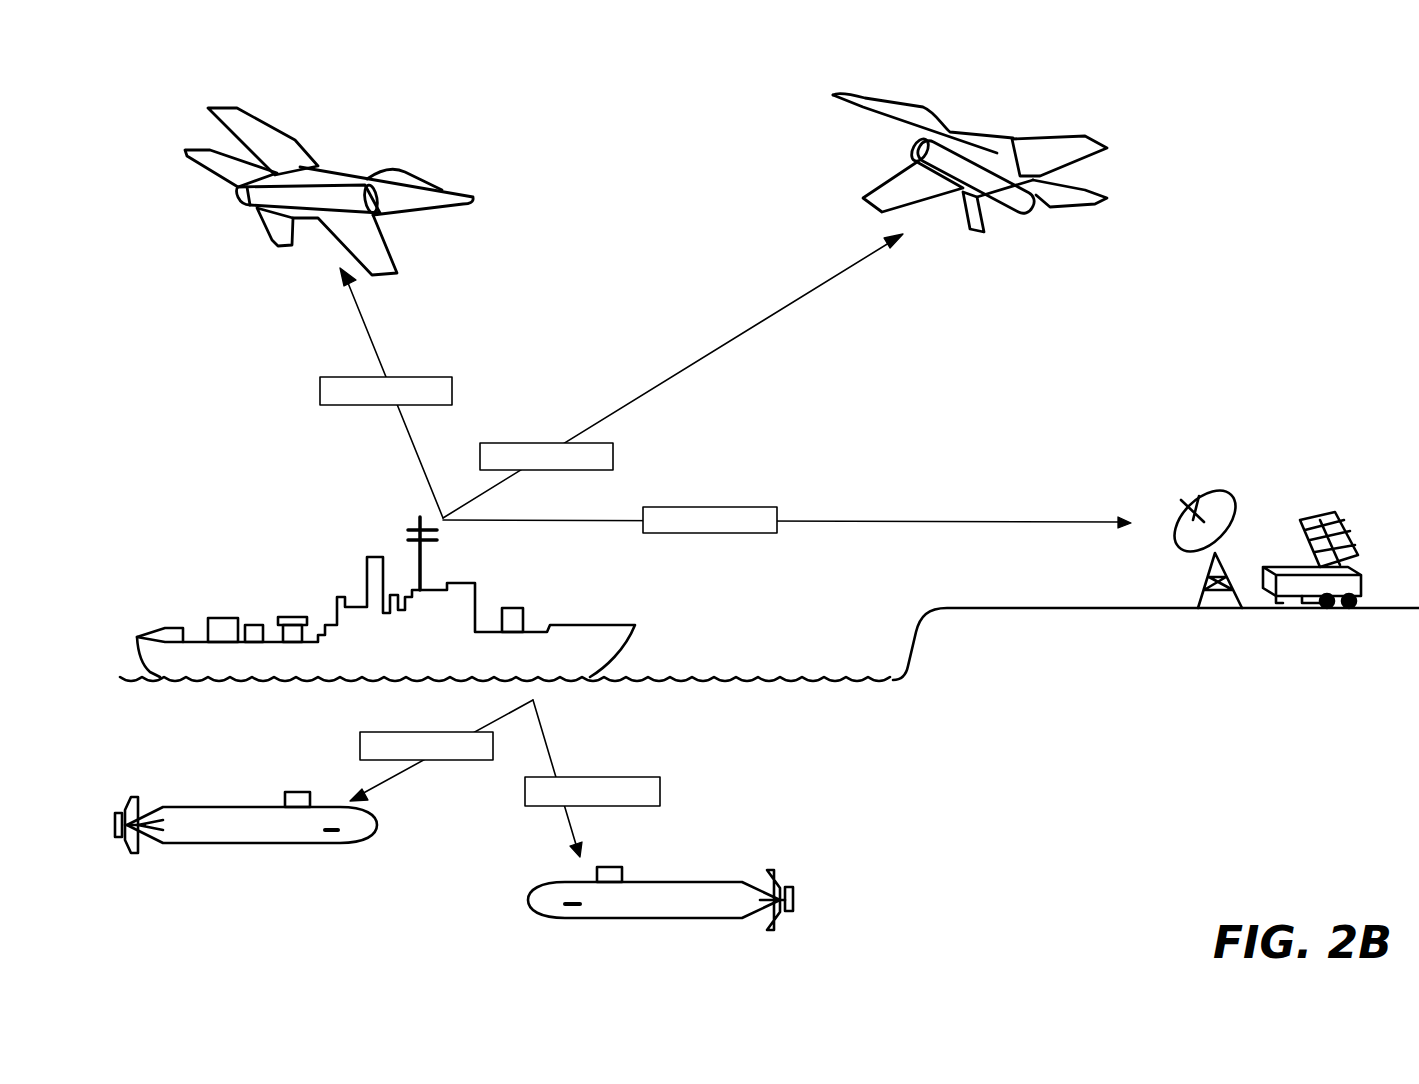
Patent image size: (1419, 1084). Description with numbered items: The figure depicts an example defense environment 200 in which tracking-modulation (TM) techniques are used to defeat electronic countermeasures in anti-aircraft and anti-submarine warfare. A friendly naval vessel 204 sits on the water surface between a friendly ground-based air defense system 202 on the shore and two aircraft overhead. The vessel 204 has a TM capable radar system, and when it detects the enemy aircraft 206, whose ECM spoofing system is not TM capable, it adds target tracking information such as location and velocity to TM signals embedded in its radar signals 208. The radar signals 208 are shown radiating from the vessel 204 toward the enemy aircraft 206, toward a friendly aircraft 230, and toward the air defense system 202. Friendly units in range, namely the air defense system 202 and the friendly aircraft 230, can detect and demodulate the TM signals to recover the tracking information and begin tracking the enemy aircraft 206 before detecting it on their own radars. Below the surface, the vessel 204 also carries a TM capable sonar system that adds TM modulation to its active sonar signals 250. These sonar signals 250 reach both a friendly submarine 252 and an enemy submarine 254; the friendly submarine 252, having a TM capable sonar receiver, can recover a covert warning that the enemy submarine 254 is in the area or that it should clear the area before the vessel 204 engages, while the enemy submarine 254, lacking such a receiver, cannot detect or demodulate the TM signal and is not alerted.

The defense environment 200 is at (1262, 152).
The ground-based air defense system 202 is at (1232, 479).
The naval vessel 204 is at (598, 625).
The enemy aircraft 206 is at (417, 170).
The radar signals 208 is at (320, 392).
The friendly aircraft 230 is at (925, 105).
The active sonar signals 250 is at (463, 760).
The friendly submarine 252 is at (700, 882).
The enemy submarine 254 is at (205, 807).